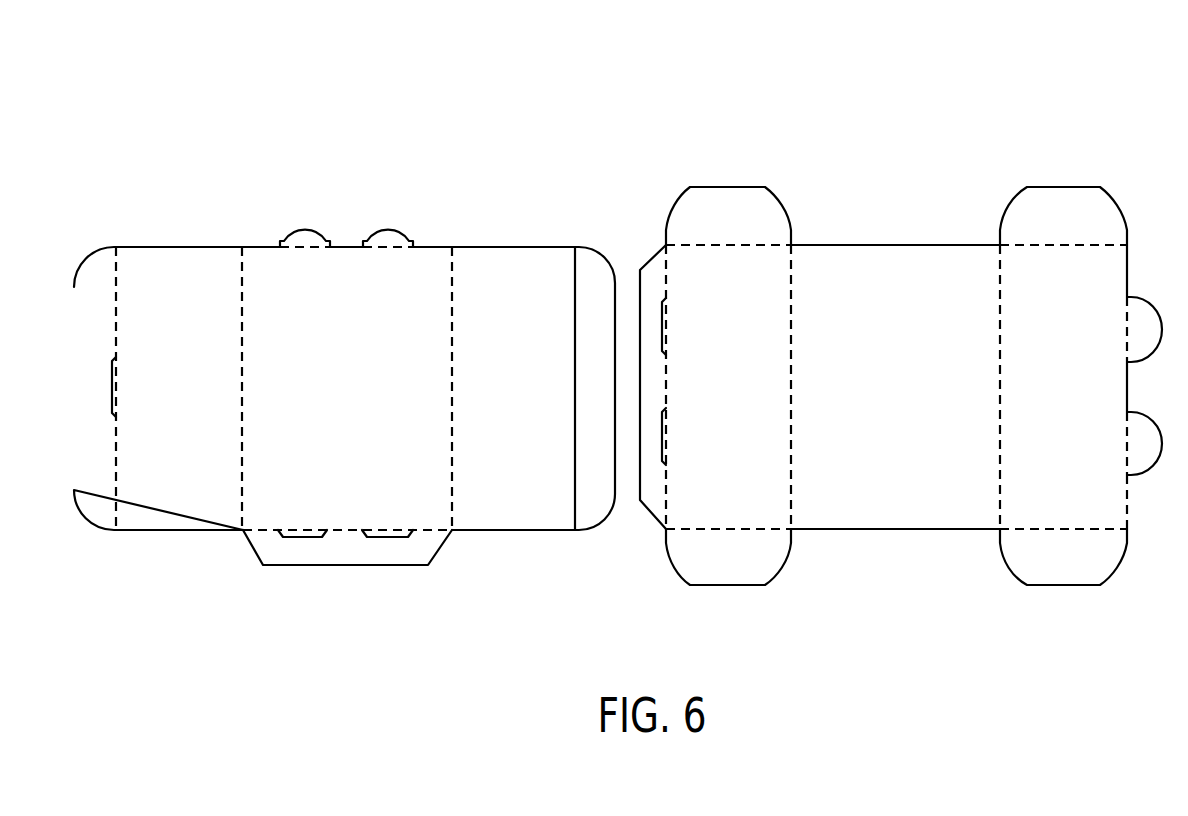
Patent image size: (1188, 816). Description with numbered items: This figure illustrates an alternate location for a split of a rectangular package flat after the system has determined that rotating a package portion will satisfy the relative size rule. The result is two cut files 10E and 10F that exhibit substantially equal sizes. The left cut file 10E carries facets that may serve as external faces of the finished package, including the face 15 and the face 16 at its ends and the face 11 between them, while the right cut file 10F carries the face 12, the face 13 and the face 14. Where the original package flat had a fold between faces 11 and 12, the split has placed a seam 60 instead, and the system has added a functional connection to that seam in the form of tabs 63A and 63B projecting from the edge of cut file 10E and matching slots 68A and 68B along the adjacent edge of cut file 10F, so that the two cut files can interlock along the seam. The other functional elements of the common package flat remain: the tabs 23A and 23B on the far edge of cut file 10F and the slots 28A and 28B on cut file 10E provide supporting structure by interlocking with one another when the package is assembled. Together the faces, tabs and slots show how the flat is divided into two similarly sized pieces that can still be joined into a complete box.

The cut file 10E is at (372, 130).
The cut file 10F is at (930, 152).
The facet 11 is at (418, 508).
The facet 12 is at (750, 256).
The facet 13 is at (905, 263).
The facet 14 is at (1012, 460).
The facet 15 is at (168, 508).
The facet 16 is at (540, 510).
The seam 60 is at (428, 247).
The tab 63A is at (308, 226).
The tab 63B is at (390, 226).
The slot 28A is at (307, 537).
The slot 28B is at (393, 537).
The slot 68A is at (657, 320).
The slot 68B is at (657, 440).
The tab 23A is at (1138, 318).
The tab 23B is at (1138, 440).